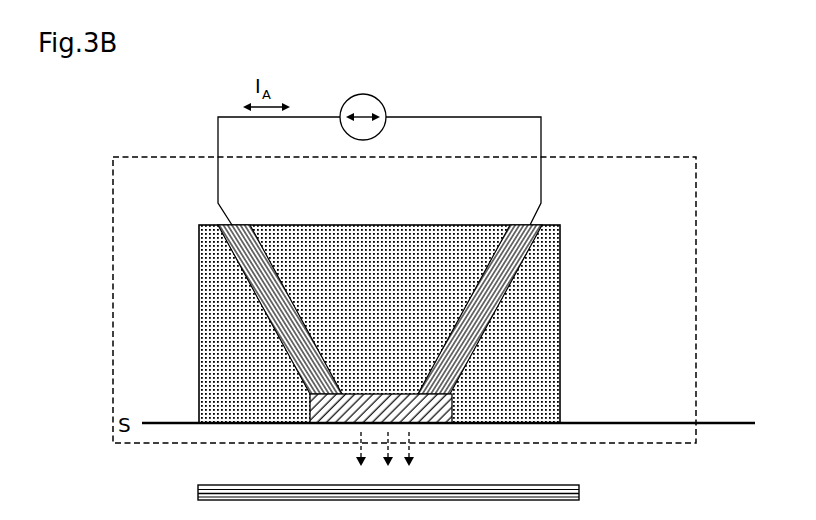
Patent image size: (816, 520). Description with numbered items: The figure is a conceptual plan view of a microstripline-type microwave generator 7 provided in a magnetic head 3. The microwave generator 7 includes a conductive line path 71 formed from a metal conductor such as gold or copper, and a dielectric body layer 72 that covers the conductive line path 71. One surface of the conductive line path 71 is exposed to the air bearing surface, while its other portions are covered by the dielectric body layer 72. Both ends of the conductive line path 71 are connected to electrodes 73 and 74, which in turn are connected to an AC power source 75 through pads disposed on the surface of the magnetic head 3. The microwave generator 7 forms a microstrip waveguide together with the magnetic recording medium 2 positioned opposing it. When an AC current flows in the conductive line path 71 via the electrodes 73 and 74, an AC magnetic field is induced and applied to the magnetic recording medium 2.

The magnetic recording medium 2 is at (582, 490).
The magnetic head 3 is at (698, 180).
The microwave generator 7 is at (590, 315).
The conductive line path 71 is at (323, 425).
The dielectric body layer 72 is at (208, 326).
The electrode 73 is at (254, 228).
The electrode 74 is at (490, 228).
The AC power source 75 is at (363, 95).